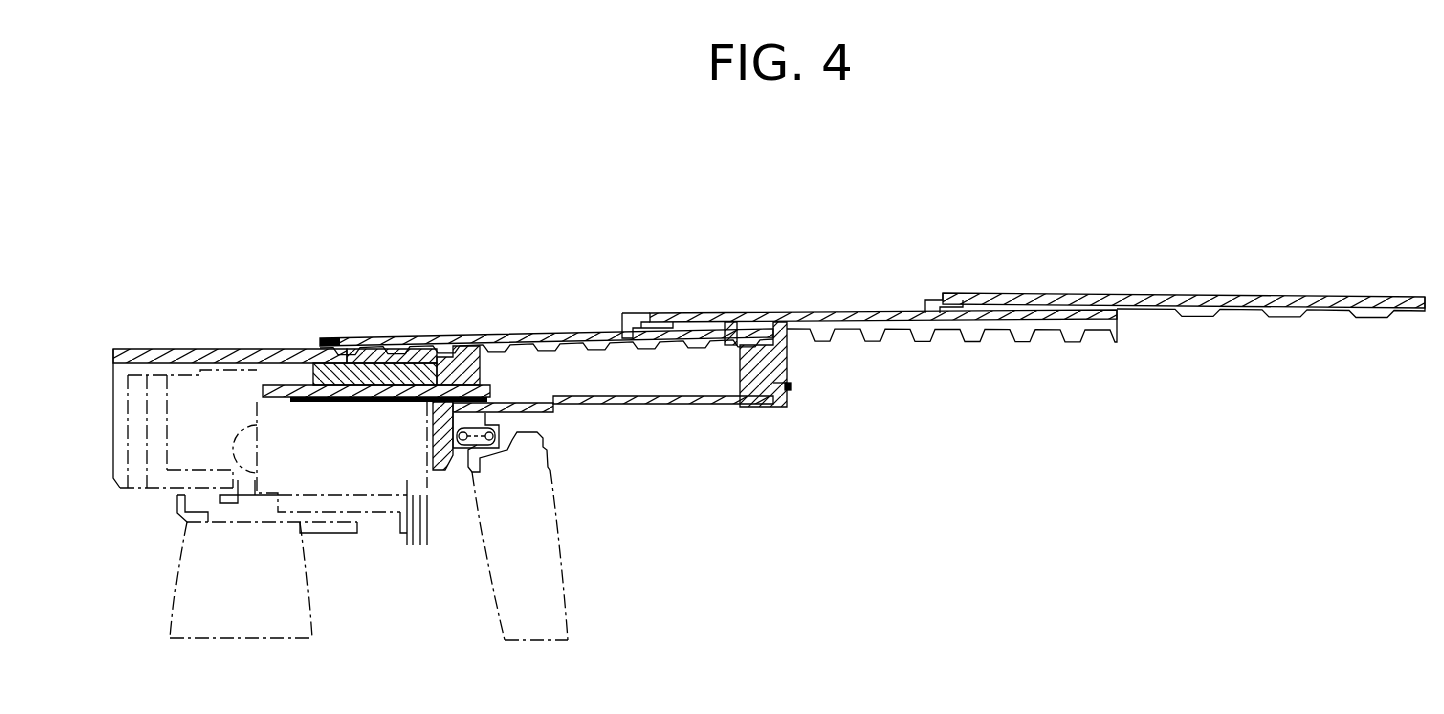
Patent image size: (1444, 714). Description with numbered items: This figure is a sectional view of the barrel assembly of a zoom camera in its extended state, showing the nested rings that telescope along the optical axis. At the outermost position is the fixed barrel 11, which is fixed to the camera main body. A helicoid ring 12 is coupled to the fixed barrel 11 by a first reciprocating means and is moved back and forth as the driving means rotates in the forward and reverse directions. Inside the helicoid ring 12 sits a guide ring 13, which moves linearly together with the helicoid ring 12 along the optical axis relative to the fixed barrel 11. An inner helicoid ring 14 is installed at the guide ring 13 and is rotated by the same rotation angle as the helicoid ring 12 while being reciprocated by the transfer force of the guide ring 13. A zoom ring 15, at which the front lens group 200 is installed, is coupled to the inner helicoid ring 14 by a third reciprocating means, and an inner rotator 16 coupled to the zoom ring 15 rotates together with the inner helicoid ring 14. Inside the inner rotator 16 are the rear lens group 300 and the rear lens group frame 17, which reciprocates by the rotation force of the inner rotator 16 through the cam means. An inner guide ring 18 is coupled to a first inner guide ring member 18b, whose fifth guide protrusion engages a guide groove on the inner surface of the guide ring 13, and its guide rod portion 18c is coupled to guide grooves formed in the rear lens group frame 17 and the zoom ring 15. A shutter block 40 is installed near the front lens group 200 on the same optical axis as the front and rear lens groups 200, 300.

The fixed barrel 11 is at (1275, 298).
The helicoid ring 12 is at (792, 313).
The guide ring 13 is at (900, 332).
The inner helicoid ring 14 is at (518, 340).
The zoom ring 15 is at (283, 356).
The inner rotator 16 is at (425, 365).
The rear lens group frame 17 is at (343, 397).
The inner guide ring 18 is at (766, 424).
The first inner guide ring member 18b is at (787, 367).
The guide rod portion 18c is at (626, 410).
The shutter block 40 is at (282, 432).
The front lens group 200 is at (313, 598).
The rear lens group 300 is at (568, 585).